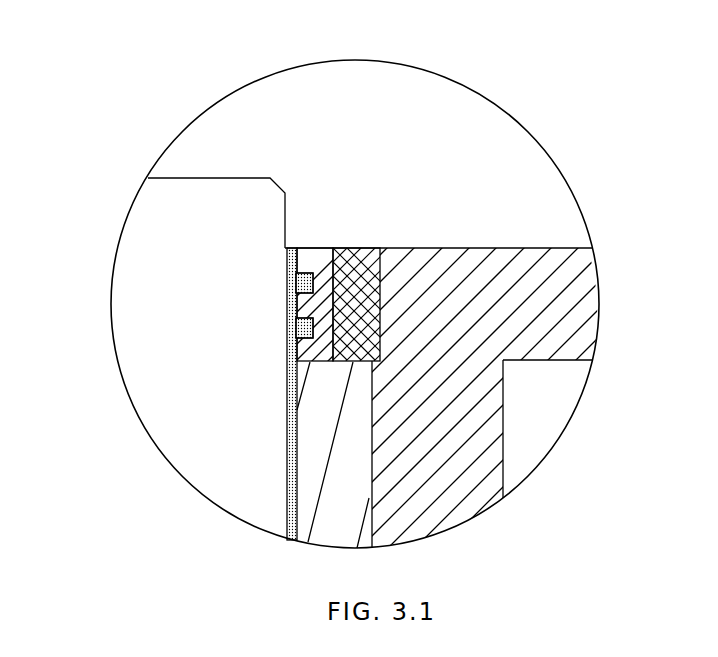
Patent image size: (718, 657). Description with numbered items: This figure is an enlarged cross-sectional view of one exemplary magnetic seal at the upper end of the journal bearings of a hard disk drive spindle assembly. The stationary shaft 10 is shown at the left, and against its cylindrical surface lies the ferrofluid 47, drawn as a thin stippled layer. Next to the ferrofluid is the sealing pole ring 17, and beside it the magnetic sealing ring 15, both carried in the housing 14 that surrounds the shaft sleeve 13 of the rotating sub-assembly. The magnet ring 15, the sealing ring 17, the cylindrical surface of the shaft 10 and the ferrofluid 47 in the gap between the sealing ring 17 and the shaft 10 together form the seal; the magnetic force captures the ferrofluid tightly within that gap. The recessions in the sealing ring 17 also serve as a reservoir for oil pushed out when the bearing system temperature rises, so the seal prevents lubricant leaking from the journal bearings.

The shaft 10 is at (198, 244).
The shaft sleeve 13 is at (345, 477).
The housing 14 is at (445, 337).
The magnetic sealing ring 15 is at (352, 284).
The sealing pole ring 17 is at (312, 265).
The ferrofluid 47 is at (287, 250).